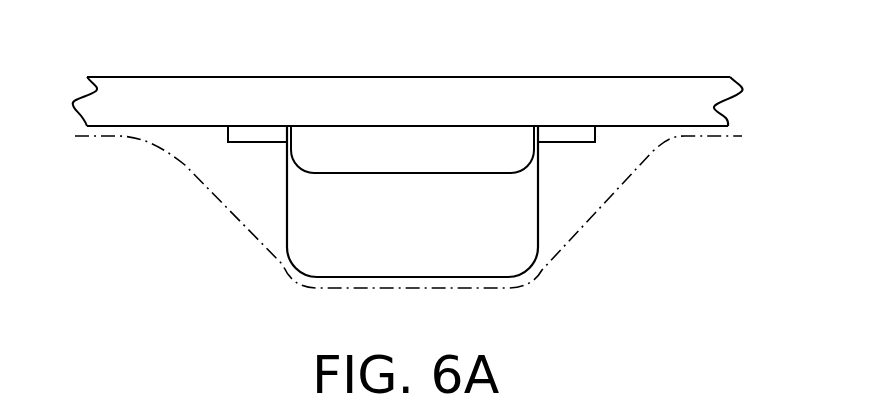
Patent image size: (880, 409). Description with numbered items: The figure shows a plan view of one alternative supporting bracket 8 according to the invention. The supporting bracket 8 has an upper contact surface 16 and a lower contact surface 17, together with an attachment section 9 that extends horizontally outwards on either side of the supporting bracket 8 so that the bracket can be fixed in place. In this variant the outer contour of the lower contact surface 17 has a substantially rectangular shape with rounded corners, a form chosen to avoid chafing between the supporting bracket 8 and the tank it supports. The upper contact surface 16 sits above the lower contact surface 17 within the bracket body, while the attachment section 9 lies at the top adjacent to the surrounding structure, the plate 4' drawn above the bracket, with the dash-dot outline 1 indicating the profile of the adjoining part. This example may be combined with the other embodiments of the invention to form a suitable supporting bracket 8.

The sheet metal profile / outline (dash-dot) 1 is at (163, 145).
The plate 4' is at (413, 63).
The supporting bracket 8 is at (386, 110).
The attachment section 9 is at (558, 132).
The upper contact surface 16 is at (478, 167).
The lower contact surface 17 is at (313, 250).